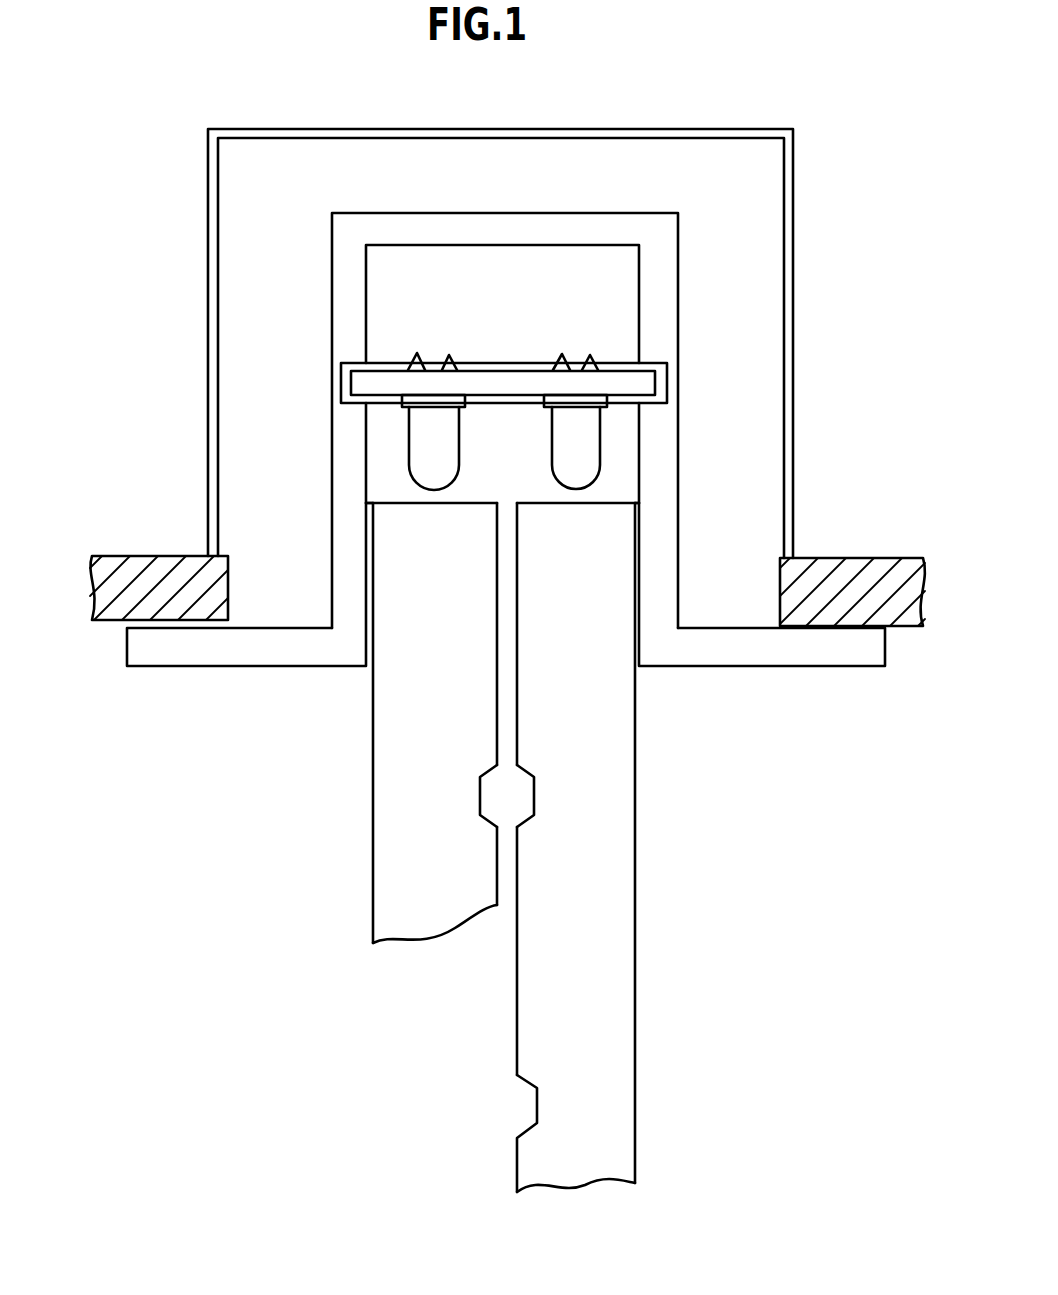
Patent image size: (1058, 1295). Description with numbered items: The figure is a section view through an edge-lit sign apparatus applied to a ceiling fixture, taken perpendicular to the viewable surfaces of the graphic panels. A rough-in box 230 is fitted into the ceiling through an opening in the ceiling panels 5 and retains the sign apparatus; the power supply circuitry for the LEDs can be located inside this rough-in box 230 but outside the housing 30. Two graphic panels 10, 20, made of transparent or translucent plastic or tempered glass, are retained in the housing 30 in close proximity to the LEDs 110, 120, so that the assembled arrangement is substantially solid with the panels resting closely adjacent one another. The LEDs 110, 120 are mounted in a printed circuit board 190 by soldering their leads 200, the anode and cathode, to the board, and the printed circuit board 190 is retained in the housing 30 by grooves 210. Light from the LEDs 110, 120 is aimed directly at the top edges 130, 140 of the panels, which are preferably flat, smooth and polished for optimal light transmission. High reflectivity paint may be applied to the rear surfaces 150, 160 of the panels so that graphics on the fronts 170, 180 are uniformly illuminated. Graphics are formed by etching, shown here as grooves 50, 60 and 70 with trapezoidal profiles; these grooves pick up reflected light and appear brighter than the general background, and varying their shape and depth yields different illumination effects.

The ceiling panels 5 is at (108, 556).
The graphic panel 10 is at (387, 737).
The graphic panel 20 is at (574, 847).
The housing 30 is at (667, 213).
The groove 50 is at (480, 790).
The groove 60 is at (537, 797).
The groove 70 is at (537, 1103).
The LED 110 is at (430, 444).
The LED 120 is at (590, 449).
The top edge of graphic panel 130 is at (387, 503).
The top edge of graphic panel 140 is at (620, 507).
The rear surface of graphic panel 150 is at (518, 1052).
The rear surface of graphic panel 160 is at (500, 905).
The front of graphic panel 170 is at (370, 900).
The front of graphic panel 180 is at (636, 918).
The printed circuit board 190 is at (622, 368).
The leads 200 is at (417, 353).
The grooves 210 is at (667, 382).
The rough-in box 230 is at (208, 332).